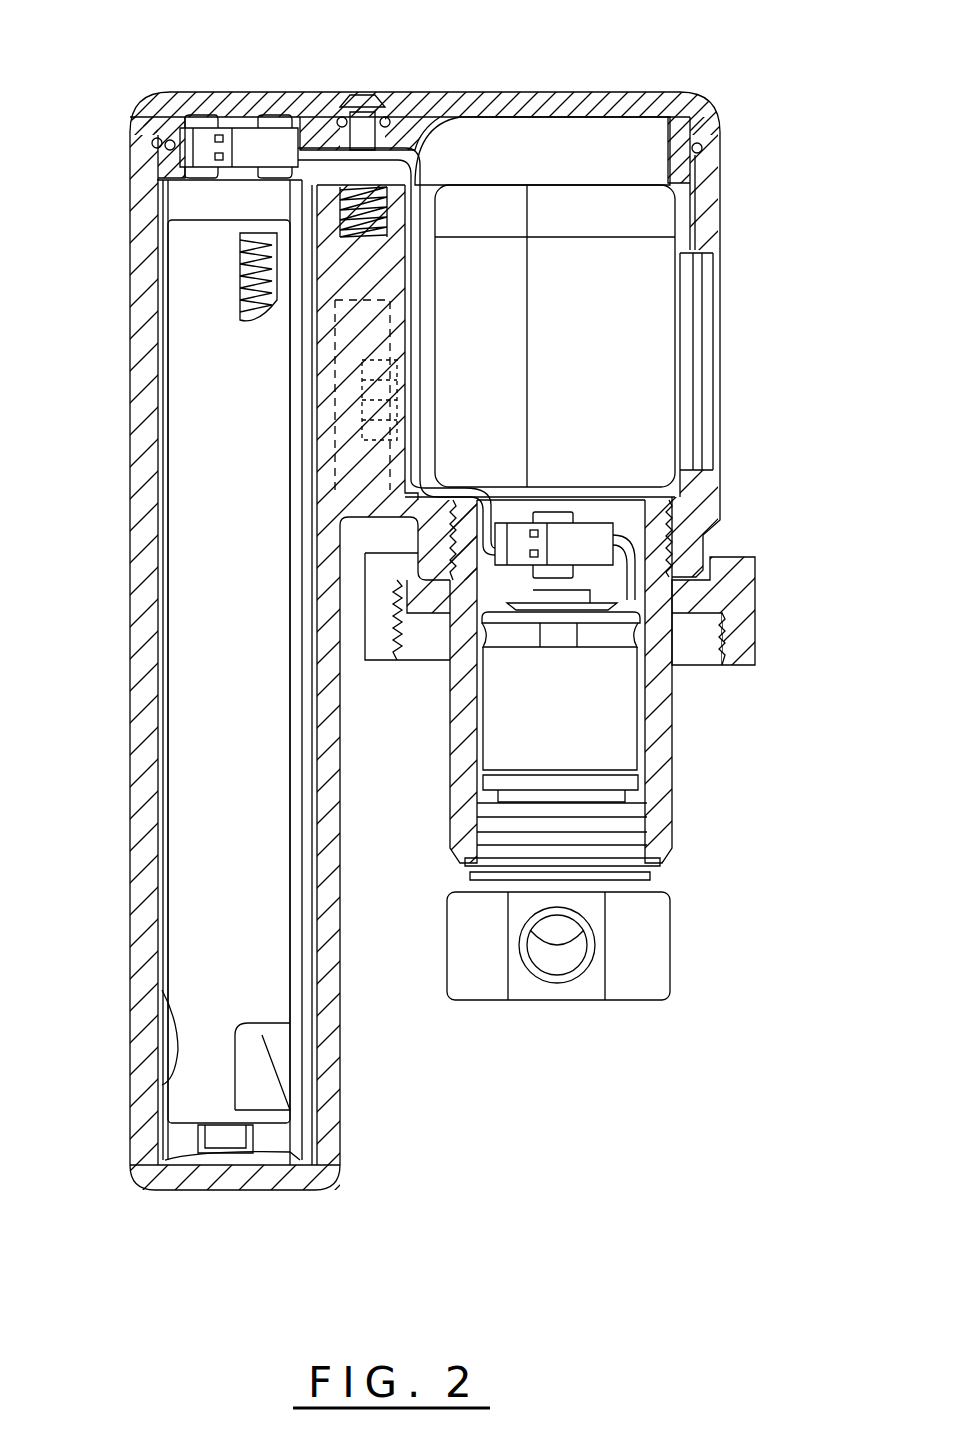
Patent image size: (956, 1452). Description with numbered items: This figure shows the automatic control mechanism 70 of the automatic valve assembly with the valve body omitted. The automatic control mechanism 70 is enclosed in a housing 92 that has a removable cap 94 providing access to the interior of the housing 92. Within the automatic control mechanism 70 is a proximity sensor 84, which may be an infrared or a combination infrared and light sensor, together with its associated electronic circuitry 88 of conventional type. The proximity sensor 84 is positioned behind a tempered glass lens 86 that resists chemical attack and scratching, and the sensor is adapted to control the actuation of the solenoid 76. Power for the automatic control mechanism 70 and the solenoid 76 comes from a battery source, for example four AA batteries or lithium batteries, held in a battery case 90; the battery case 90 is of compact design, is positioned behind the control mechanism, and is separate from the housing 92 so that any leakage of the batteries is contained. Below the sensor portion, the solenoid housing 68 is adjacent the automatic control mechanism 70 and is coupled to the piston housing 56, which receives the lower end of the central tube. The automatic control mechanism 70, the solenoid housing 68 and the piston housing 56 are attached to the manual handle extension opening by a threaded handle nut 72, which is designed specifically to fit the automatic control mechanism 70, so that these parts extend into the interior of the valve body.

The piston housing 56 is at (672, 935).
The solenoid housing 68 is at (672, 760).
The automatic control mechanism 70 is at (410, 80).
The threaded handle nut 72 is at (757, 632).
The solenoid 76 is at (572, 731).
The proximity sensor 84 is at (608, 398).
The tempered glass lens 86 is at (712, 367).
The electronic circuitry 88 is at (613, 195).
The battery case 90 is at (246, 676).
The housing 92 is at (128, 740).
The removable cap 94 is at (505, 98).